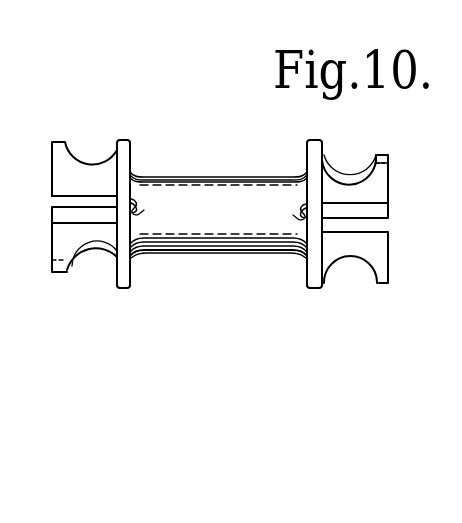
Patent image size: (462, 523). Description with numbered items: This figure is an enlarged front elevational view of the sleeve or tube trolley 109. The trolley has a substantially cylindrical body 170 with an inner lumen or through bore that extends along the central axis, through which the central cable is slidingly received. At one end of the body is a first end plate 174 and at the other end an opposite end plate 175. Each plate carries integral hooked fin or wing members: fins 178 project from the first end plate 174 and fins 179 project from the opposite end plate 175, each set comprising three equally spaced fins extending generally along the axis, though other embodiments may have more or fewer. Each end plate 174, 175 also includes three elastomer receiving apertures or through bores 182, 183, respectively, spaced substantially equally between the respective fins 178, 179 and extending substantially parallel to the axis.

The sleeve or tube trolley 109 is at (194, 177).
The cylindrical body 170 is at (205, 254).
The first end plate 174 is at (124, 140).
The opposite end plate 175 is at (309, 140).
The hooked fin or wing member 178 is at (63, 151).
The hooked fin or wing member 179 is at (382, 155).
The elastomer receiving aperture or through bore 182 is at (144, 210).
The elastomer receiving aperture or through bore 183 is at (302, 210).